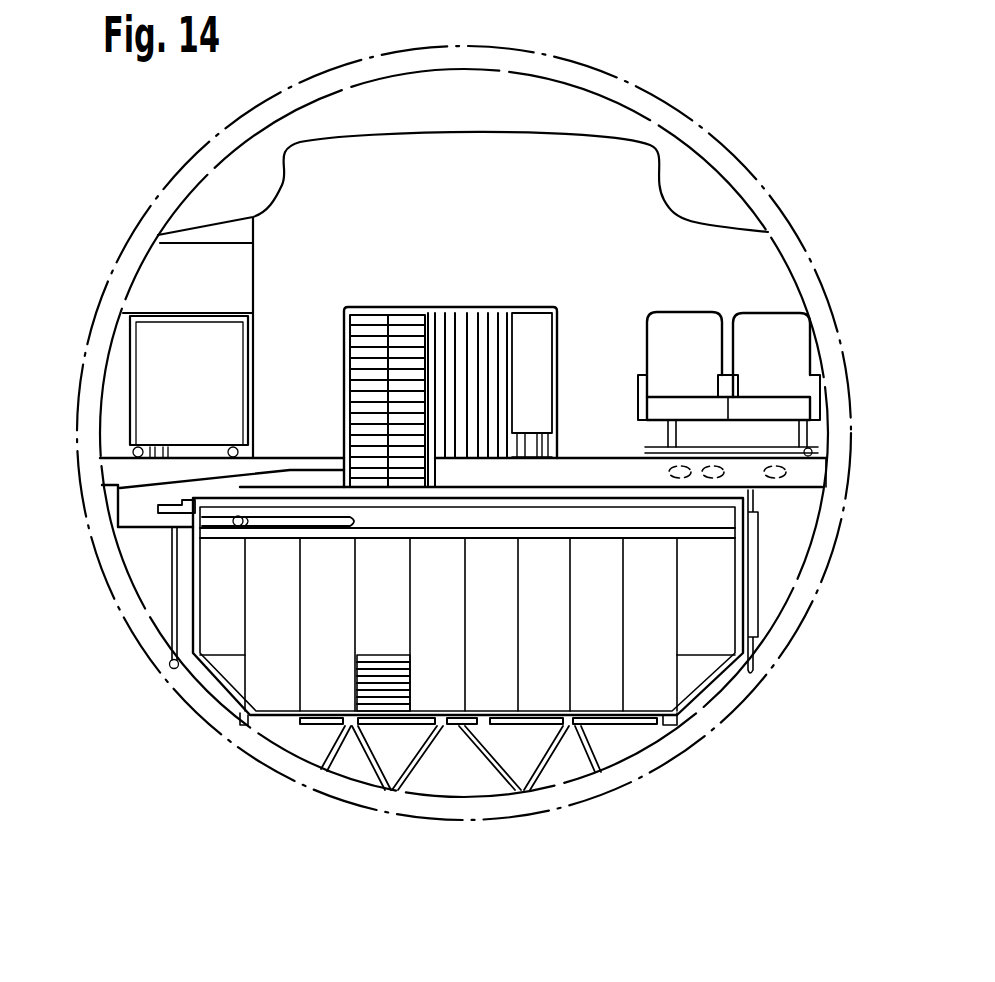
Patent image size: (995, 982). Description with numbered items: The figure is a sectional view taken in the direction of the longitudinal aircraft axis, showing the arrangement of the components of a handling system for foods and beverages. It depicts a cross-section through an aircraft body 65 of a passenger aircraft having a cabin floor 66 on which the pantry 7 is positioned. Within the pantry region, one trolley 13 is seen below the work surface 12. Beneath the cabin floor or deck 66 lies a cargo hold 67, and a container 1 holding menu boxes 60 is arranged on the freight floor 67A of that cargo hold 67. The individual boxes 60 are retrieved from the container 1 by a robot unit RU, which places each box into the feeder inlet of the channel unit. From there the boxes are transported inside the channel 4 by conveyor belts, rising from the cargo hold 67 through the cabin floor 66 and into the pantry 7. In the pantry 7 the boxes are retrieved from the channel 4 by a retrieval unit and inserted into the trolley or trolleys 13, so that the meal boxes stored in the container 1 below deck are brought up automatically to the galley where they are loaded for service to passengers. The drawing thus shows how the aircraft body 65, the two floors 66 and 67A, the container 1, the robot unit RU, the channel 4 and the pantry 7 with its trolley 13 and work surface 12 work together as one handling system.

The aircraft body 65 is at (688, 118).
The cabin floor 66 is at (598, 455).
The pantry 7 is at (500, 306).
The work surface 12 is at (222, 312).
The trolley 13 is at (200, 378).
The channel 4 is at (285, 472).
The container 1 is at (195, 606).
The robot unit RU is at (197, 536).
The menu boxes 60 is at (362, 657).
The cargo hold 67 is at (720, 521).
The freight floor 67A is at (668, 722).